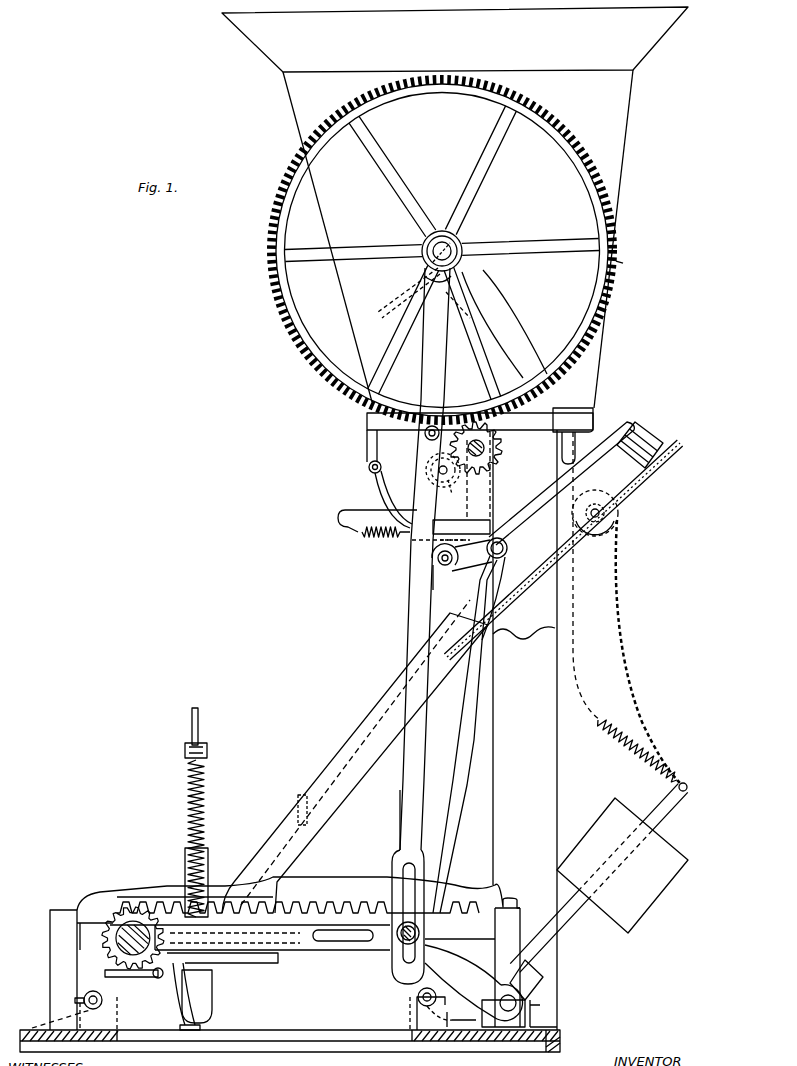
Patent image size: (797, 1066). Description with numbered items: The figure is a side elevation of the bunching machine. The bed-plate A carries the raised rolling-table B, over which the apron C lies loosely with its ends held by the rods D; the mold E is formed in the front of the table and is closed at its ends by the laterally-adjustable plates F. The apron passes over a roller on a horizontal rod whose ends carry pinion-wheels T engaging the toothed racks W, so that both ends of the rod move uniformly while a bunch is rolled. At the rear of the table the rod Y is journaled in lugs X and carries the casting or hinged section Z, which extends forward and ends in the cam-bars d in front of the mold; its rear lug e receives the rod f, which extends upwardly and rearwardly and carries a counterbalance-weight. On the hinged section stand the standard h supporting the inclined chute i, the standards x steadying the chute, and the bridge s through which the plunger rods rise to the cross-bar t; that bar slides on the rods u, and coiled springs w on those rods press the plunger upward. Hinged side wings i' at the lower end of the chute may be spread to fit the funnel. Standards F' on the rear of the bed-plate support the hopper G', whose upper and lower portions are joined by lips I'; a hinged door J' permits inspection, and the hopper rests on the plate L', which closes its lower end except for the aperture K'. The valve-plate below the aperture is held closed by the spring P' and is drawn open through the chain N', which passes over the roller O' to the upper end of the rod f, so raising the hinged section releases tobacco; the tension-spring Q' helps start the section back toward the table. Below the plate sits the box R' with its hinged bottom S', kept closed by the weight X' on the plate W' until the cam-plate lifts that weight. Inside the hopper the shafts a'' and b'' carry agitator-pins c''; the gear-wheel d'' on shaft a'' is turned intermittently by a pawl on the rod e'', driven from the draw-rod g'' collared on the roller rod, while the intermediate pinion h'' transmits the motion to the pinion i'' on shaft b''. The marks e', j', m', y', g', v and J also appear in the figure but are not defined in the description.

The hopper G' is at (442, 250).
The horizontal shaft a'' is at (454, 248).
The gear-wheel d'' is at (628, 265).
The agitator-pins c'' is at (421, 293).
The rod e'' is at (425, 559).
The pitman lower portion e' is at (408, 804).
The pin j' is at (432, 416).
The lips I' is at (480, 464).
The intermediate pinion-wheel h'' is at (484, 448).
The horizontal shaft b'' is at (451, 470).
The pinion i'' is at (455, 491).
The hinged door J' is at (370, 480).
The aperture K' is at (393, 499).
The spring P' is at (377, 532).
The plate L' is at (451, 523).
The slot m' is at (456, 543).
The box R' is at (457, 566).
The hinged bottom S' is at (479, 589).
The standard h is at (465, 734).
The standards F' is at (546, 730).
The plate W' is at (561, 483).
The weight X' is at (641, 445).
The rod y' is at (563, 550).
The roller O' is at (606, 513).
The chain N' is at (648, 651).
The tension-spring Q' is at (642, 755).
The weight g' is at (622, 865).
The rod f is at (599, 878).
The lug e is at (526, 980).
The rod Y is at (505, 1007).
The hinged section Z is at (463, 982).
The link v is at (460, 931).
The lugs X is at (543, 1012).
The toothed racks W is at (285, 953).
The standards x is at (298, 942).
The draw-rod g'' is at (250, 933).
The rolling-table B is at (392, 917).
The pinion-wheels T is at (128, 938).
The pin bar J is at (131, 981).
The mold E is at (208, 996).
The cam-bars d is at (185, 996).
The laterally-adjustable plates F is at (197, 996).
The rods D is at (260, 1009).
The apron C is at (254, 1016).
The bed-plate A is at (388, 1046).
The rods u is at (201, 726).
The cross-bar t is at (201, 750).
The coiled springs w is at (204, 788).
The bridge s is at (208, 862).
The inclined chute i is at (355, 763).
The hinged side wings i' is at (355, 752).